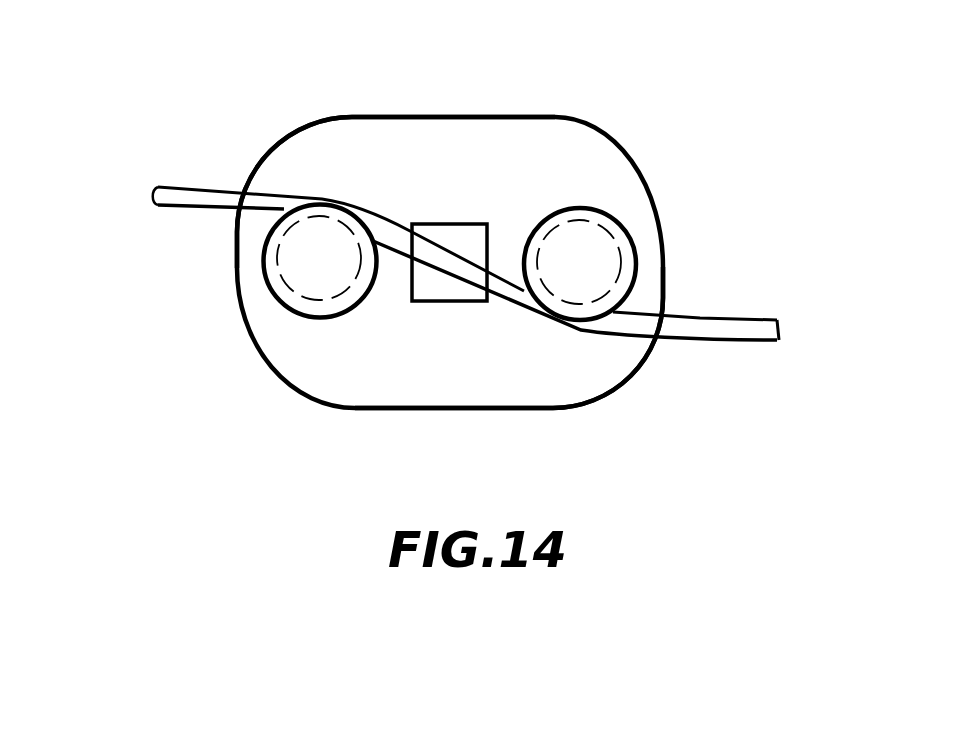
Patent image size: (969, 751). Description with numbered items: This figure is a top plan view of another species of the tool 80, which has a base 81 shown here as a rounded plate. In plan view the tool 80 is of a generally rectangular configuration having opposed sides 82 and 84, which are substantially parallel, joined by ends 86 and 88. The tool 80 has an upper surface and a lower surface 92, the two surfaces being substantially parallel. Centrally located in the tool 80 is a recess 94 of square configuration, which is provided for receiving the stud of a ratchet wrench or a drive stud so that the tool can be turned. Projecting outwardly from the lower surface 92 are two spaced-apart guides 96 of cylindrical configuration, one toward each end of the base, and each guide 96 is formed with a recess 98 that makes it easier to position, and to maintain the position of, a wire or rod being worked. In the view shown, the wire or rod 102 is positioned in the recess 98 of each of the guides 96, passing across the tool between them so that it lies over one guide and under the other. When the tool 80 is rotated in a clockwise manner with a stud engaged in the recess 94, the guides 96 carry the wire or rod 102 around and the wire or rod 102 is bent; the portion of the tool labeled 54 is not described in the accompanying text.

The body wall portion 54 is at (360, 182).
The tool 80 is at (323, 404).
The base 81 is at (543, 358).
The side 82 is at (433, 115).
The side 84 is at (470, 410).
The end 86 is at (235, 265).
The end 88 is at (668, 269).
The lower surface 92 is at (462, 361).
The recess 94 is at (482, 243).
The guide 96 is at (309, 312).
The recess 98 is at (272, 305).
The wire or rod 102 is at (214, 200).